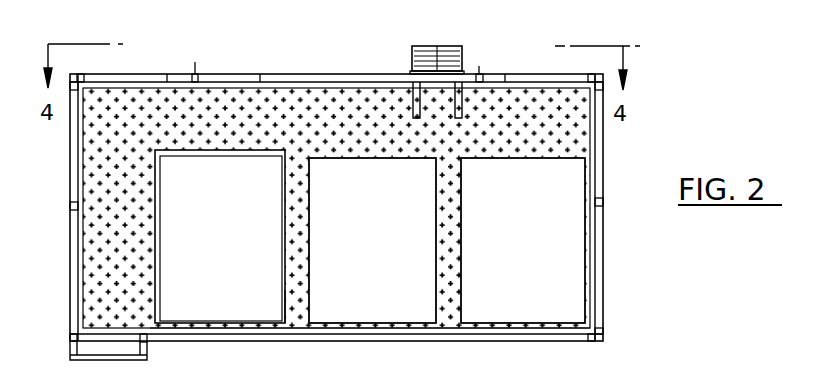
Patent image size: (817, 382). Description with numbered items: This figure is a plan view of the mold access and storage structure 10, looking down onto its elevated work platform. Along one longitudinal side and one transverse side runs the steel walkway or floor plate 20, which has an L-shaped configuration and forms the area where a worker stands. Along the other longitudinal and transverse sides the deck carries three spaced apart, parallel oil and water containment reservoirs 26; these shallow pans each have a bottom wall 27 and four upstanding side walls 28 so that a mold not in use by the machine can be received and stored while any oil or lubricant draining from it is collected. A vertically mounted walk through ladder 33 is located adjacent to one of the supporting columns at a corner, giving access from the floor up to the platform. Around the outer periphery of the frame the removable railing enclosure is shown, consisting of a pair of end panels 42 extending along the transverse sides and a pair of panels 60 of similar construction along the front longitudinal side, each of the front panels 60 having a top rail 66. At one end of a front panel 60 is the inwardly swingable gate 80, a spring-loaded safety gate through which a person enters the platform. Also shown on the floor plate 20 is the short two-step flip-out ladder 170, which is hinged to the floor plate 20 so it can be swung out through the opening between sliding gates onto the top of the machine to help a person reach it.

The mold access and storage structure 10 is at (663, 120).
The floor plate 20 is at (95, 143).
The oil and water containment reservoirs 26 is at (394, 326).
The bottom wall 27 is at (222, 313).
The side walls 28 is at (285, 305).
The walk through ladder 33 is at (147, 348).
The end panels 42 is at (68, 238).
The panels 60 is at (370, 355).
The top rail 66 is at (601, 355).
The inwardly swingable gate 80 is at (108, 358).
The flip-out ladder 170 is at (463, 52).